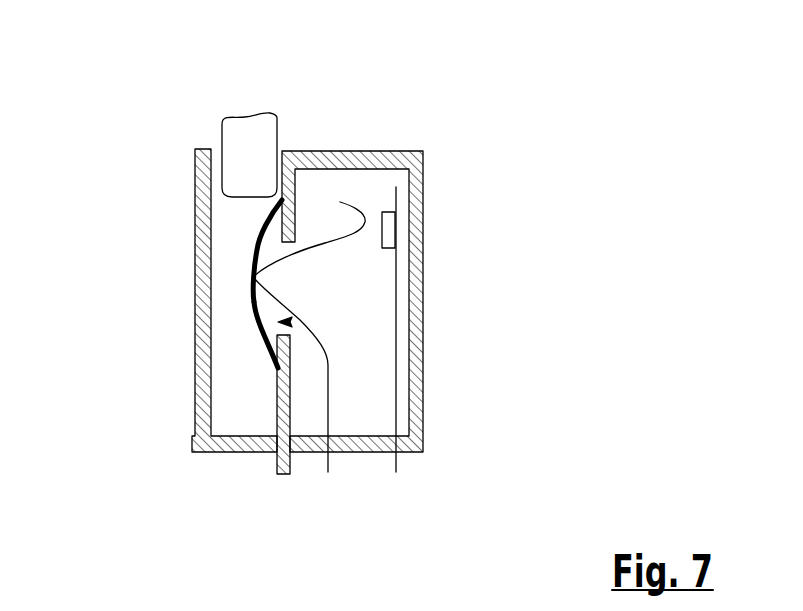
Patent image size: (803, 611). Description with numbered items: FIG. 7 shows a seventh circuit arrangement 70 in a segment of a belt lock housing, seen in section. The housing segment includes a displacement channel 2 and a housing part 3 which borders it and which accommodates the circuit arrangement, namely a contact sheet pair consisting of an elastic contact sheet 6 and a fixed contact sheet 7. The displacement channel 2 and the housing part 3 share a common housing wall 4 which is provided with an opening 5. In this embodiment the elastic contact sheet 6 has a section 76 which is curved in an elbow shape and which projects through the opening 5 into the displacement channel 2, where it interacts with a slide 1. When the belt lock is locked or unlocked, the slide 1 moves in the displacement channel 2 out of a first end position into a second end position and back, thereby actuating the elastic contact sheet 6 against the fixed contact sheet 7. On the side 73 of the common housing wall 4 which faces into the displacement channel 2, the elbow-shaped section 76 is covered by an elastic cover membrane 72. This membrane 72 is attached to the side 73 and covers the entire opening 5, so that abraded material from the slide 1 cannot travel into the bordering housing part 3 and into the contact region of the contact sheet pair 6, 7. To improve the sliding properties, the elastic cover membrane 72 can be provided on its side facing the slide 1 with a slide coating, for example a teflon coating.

The valve arrangement 70 is at (542, 132).
The slide 1 is at (237, 137).
The displacement channel 2 is at (225, 418).
The housing part 3 is at (318, 183).
The common housing wall 4 is at (277, 420).
The opening 5 is at (297, 320).
The elastic contact sheet 6 is at (332, 410).
The fixed contact sheet 7 is at (392, 405).
The elastic cover membrane 72 is at (257, 246).
The side of the common housing wall 73 is at (276, 388).
The section curved in an elbow shape 76 is at (253, 313).